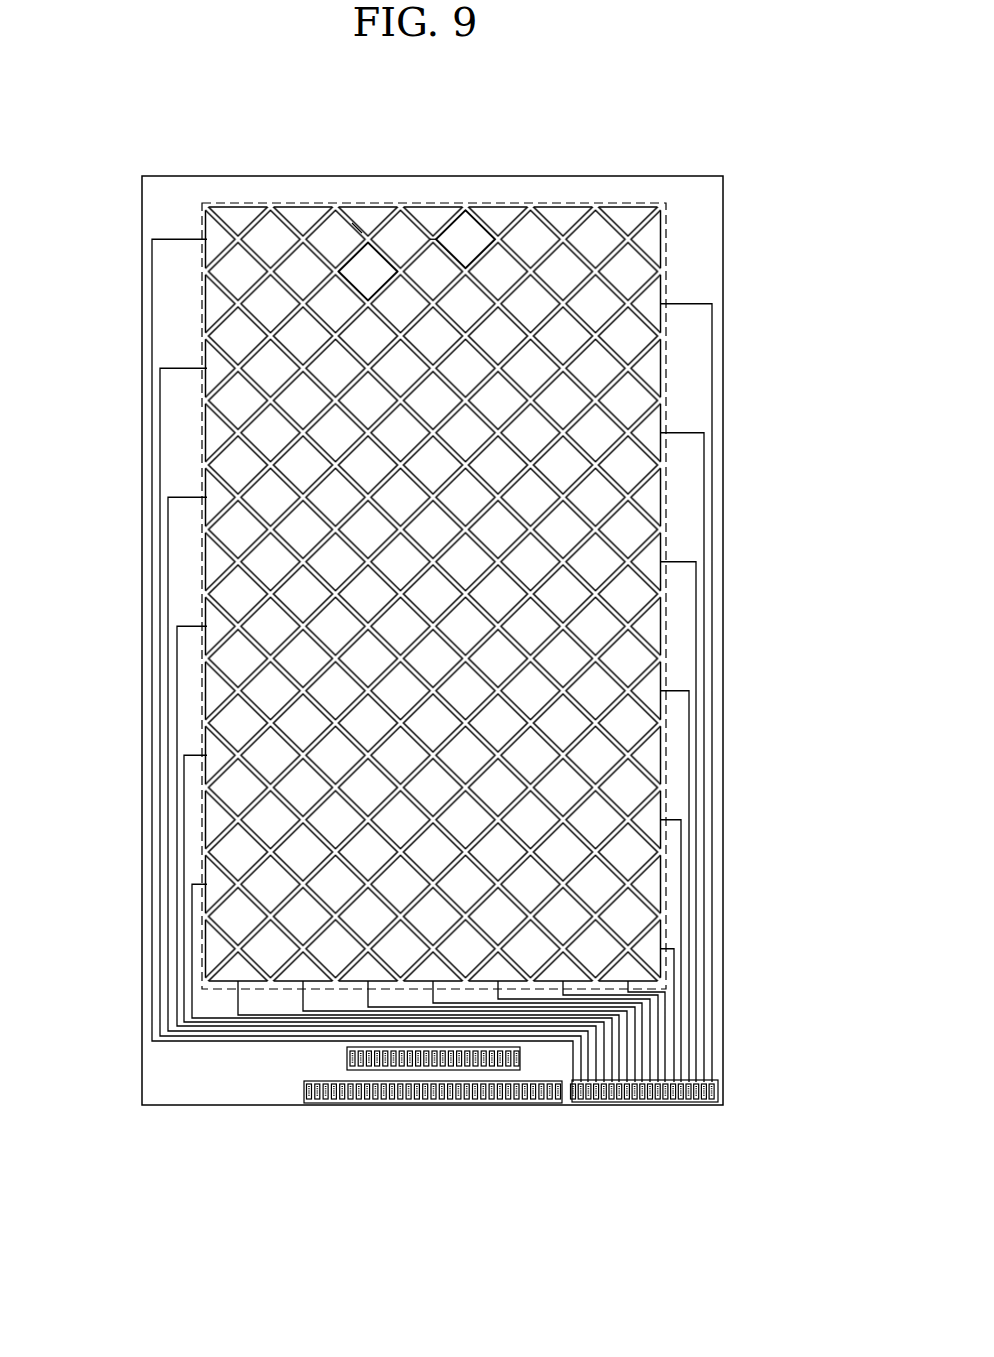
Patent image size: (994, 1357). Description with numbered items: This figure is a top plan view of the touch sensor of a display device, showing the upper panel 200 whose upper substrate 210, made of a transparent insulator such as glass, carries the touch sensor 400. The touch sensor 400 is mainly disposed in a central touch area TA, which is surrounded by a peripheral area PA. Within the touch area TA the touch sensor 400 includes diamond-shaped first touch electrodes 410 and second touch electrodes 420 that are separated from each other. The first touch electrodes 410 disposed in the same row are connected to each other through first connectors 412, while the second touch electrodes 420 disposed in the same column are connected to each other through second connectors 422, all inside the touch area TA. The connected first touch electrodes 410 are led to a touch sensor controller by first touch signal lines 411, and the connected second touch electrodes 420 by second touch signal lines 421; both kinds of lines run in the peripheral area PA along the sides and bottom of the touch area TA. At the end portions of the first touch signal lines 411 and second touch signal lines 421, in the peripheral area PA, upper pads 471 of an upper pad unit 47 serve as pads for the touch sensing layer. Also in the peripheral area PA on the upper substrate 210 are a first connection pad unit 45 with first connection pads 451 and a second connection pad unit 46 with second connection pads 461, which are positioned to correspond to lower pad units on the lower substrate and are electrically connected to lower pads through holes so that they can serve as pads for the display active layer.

The upper display panel 200 is at (720, 138).
The upper substrate 210 is at (723, 223).
The peripheral area PA is at (162, 203).
The touch area TA is at (640, 205).
The touch sensor 400 is at (353, 112).
The first touch electrode 410 is at (473, 237).
The first connector 412 is at (436, 232).
The second touch electrode 420 is at (370, 262).
The second connector 422 is at (357, 223).
The first touch signal line 411 is at (152, 305).
The second touch signal line 421 is at (238, 998).
The first connection pad unit 45 is at (346, 1052).
The first connection pad 451 is at (347, 1063).
The second connection pad unit 46 is at (387, 1105).
The second connection pad 461 is at (444, 1105).
The upper pad unit 47 is at (566, 1105).
The upper pad 471 is at (613, 1105).